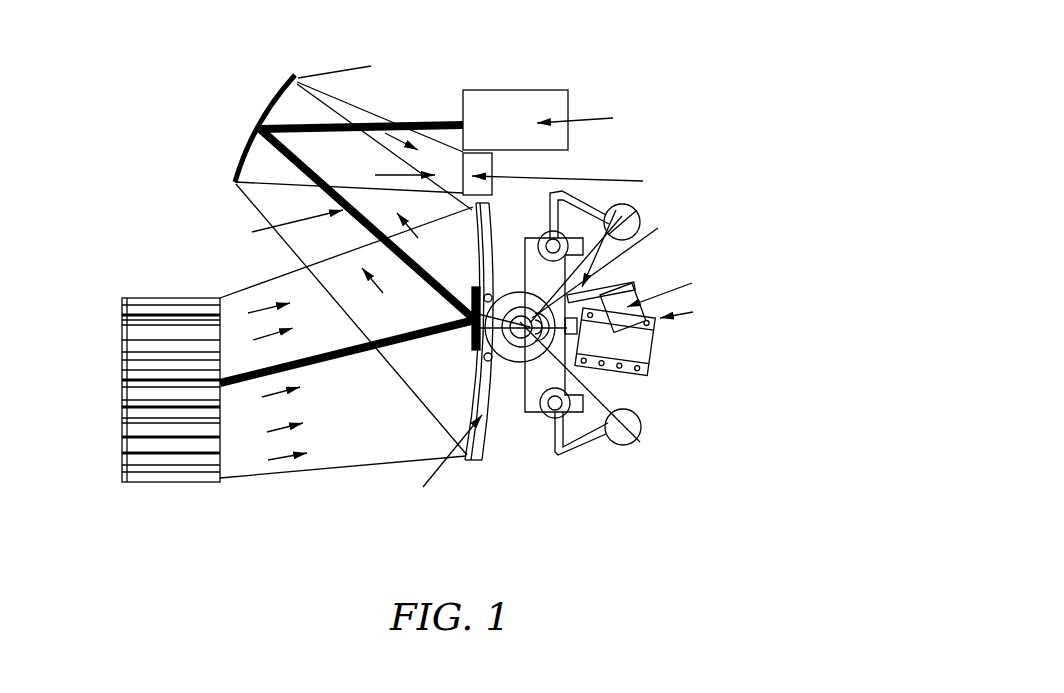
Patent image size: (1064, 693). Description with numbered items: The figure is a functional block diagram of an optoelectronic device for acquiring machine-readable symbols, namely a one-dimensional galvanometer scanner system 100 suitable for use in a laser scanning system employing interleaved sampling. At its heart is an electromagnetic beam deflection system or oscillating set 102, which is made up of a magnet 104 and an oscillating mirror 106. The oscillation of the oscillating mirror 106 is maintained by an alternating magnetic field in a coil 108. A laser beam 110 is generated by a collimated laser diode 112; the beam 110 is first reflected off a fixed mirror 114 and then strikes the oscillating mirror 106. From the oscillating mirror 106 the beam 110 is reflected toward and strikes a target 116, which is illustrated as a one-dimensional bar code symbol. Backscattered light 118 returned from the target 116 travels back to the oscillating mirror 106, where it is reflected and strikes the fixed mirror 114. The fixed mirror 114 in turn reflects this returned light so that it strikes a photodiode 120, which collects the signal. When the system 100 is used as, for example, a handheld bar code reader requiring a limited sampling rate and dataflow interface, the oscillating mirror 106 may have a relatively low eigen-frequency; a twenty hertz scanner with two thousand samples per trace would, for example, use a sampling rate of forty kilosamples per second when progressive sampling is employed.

The one-dimensional galvanometer scanner system 100 is at (698, 50).
The electromagnetic beam deflection system 102 is at (517, 422).
The magnet 104 is at (634, 283).
The oscillating mirror 106 is at (472, 398).
The coil 108 is at (655, 355).
The laser beam 110 is at (403, 120).
The collimated laser diode 112 is at (568, 98).
The fixed mirror 114 is at (246, 150).
The target 116 is at (122, 397).
The backscattered light 118 is at (253, 312).
The photodiode 120 is at (493, 160).